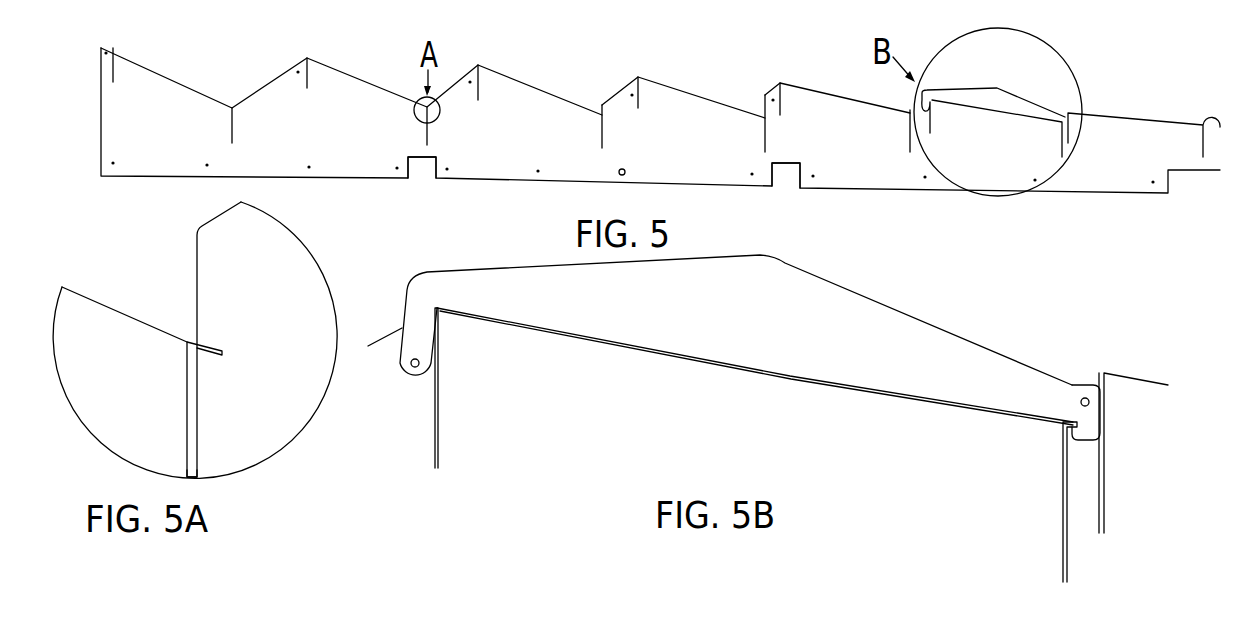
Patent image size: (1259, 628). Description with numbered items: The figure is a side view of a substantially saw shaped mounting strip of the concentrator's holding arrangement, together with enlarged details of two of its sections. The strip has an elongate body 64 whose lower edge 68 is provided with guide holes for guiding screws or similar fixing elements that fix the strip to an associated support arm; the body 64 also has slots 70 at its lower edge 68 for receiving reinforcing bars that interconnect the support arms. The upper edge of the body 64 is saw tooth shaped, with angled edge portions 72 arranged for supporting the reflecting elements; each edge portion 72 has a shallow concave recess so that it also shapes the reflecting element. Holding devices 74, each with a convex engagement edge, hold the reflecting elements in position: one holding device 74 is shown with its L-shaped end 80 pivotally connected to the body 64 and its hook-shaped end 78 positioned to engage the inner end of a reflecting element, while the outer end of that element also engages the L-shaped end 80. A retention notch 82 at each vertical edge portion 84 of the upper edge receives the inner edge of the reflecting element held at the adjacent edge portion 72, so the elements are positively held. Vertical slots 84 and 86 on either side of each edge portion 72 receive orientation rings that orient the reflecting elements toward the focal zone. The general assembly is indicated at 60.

In FIG. 5, the panel assembly 60 is at (224, 56).
In FIG. 5, the elongate body 64 is at (143, 143).
In FIG. 5B, the elongate body 64 is at (897, 453).
In FIG. 5, the lower edge 68 is at (524, 200).
In FIG. 5, the slots 70 is at (786, 189).
In FIG. 5, the angled edge portions 72 is at (368, 82).
In FIG. 5B, the angled edge portions 72 is at (916, 408).
In FIG. 5, the holding device 74 is at (870, 78).
In FIG. 5B, the hook-shaped end 78 is at (1087, 425).
In FIG. 5B, the L-shaped end 80 is at (407, 303).
In FIG. 5A, the retention notch 82 is at (194, 336).
In FIG. 5, the vertical edge portion / vertical slot 84 is at (309, 80).
In FIG. 5A, the vertical edge portion / vertical slot 84 is at (197, 262).
In FIG. 5B, the vertical edge portion / vertical slot 84 is at (435, 413).
In FIG. 5, the vertical slot 86 is at (427, 135).
In FIG. 5A, the vertical slot 86 is at (190, 478).
In FIG. 5B, the vertical slot 86 is at (1063, 517).